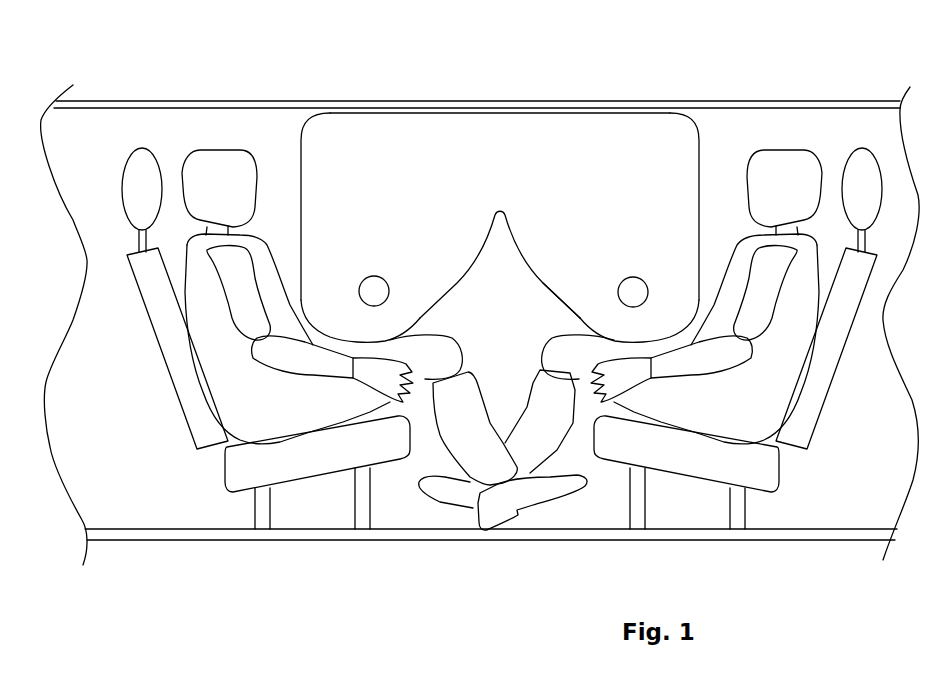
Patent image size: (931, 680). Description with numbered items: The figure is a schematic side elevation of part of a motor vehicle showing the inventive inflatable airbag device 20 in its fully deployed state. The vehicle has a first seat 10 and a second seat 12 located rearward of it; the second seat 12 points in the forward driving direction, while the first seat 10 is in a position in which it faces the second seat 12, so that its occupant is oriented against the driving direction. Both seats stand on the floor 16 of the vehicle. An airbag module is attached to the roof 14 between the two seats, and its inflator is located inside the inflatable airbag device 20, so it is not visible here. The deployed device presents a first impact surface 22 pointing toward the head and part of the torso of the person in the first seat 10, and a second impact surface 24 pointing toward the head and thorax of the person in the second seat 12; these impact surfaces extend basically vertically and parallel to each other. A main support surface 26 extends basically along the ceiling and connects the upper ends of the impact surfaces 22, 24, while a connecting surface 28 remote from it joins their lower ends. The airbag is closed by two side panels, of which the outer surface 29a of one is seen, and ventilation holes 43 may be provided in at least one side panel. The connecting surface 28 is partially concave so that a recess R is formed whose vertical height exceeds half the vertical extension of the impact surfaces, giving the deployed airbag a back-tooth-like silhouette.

The first seat 10 is at (737, 473).
The second seat 12 is at (310, 463).
The roof 14 is at (261, 104).
The floor 16 is at (547, 535).
The inflatable airbag device 20 is at (432, 152).
The first impact surface 22 is at (702, 213).
The second impact surface 24 is at (296, 208).
The main support surface 26 is at (579, 106).
The connecting surface 28 is at (551, 285).
The outer surface of side panel 29a is at (600, 153).
The ventilation hole 43 is at (376, 288).
The recess R is at (480, 297).